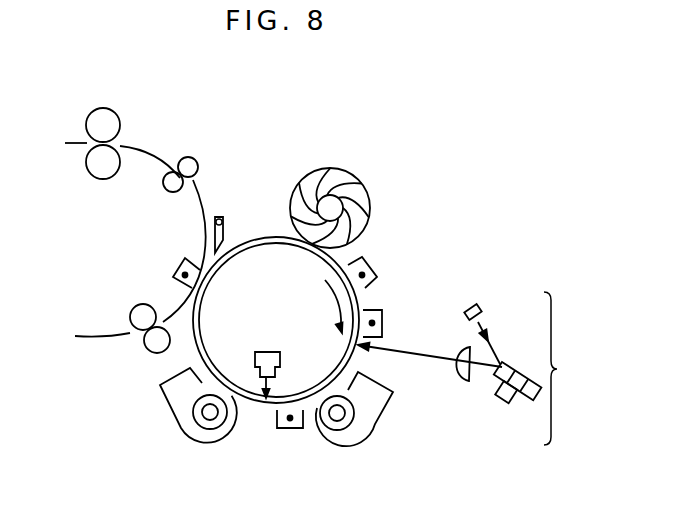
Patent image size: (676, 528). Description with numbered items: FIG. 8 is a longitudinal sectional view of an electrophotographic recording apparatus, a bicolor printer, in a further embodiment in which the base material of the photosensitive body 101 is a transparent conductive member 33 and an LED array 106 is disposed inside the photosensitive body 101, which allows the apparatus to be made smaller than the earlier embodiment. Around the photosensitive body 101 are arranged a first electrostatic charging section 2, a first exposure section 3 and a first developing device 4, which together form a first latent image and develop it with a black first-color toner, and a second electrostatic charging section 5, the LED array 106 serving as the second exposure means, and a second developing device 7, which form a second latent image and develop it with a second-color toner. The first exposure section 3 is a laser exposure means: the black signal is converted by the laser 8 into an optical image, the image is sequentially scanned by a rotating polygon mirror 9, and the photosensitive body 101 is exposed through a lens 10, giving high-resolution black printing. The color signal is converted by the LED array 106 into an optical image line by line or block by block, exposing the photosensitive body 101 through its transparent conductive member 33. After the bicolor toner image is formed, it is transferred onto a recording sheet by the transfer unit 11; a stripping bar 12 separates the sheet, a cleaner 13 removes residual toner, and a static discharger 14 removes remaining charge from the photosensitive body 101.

The first electrostatic charging section 2 is at (383, 324).
The first exposure section 3 is at (590, 391).
The first developing device 4 is at (380, 430).
The second electrostatic charging section 5 is at (290, 432).
The second developing device 7 is at (180, 432).
The laser 8 is at (472, 299).
The rotating polygon mirror 9 is at (511, 410).
The lens 10 is at (456, 383).
The transfer unit 11 is at (175, 263).
The stripping bar 12 is at (218, 212).
The cleaner 13 is at (352, 177).
The static discharger 14 is at (376, 262).
The transparent conductive member 33 is at (273, 244).
The photosensitive body 101 is at (268, 237).
The LED array 106 is at (261, 352).